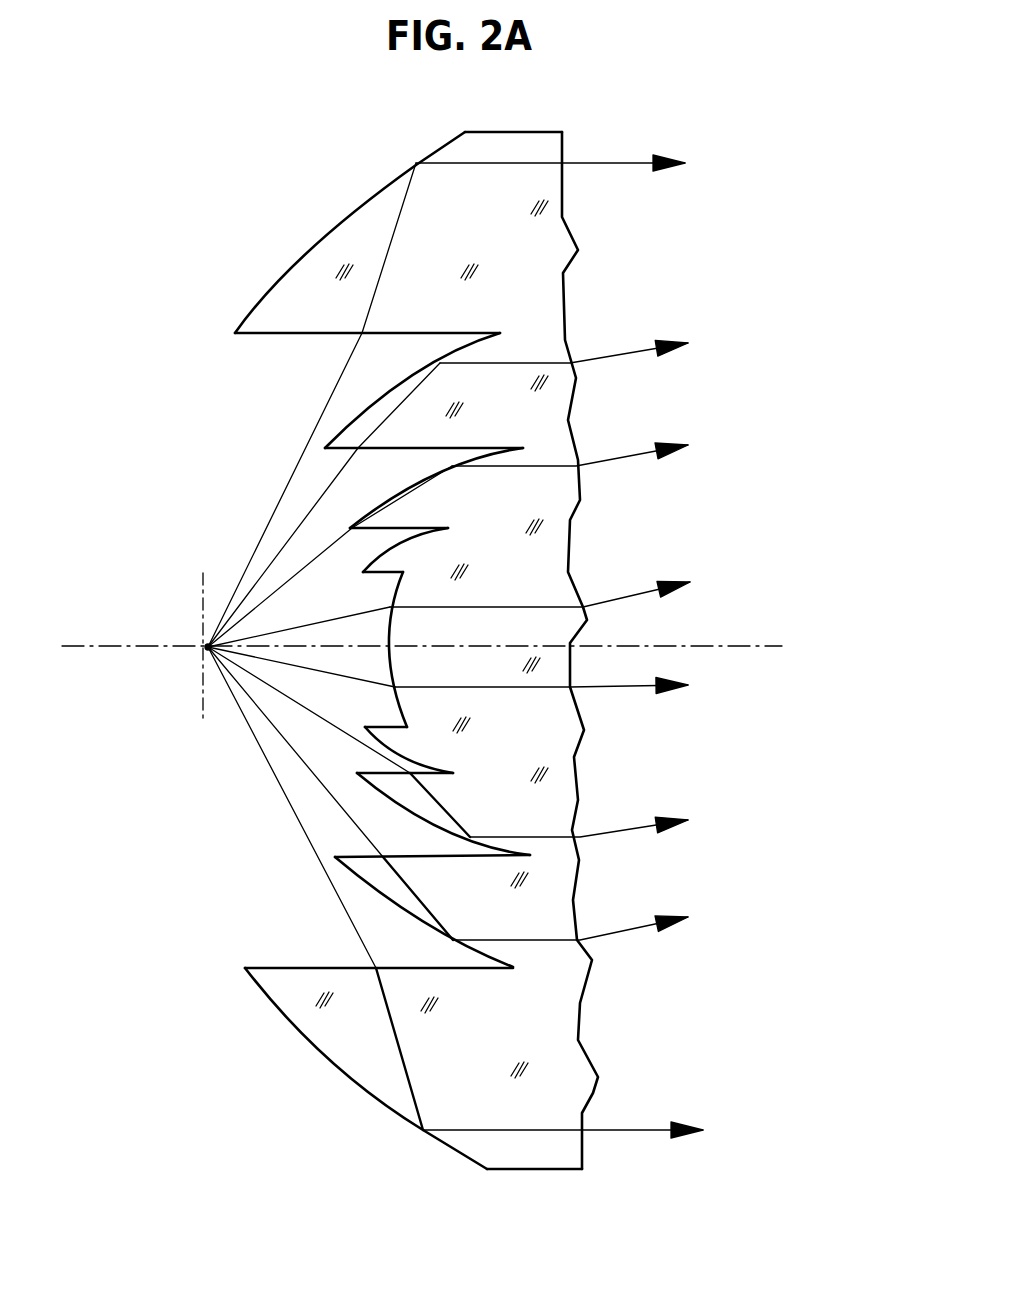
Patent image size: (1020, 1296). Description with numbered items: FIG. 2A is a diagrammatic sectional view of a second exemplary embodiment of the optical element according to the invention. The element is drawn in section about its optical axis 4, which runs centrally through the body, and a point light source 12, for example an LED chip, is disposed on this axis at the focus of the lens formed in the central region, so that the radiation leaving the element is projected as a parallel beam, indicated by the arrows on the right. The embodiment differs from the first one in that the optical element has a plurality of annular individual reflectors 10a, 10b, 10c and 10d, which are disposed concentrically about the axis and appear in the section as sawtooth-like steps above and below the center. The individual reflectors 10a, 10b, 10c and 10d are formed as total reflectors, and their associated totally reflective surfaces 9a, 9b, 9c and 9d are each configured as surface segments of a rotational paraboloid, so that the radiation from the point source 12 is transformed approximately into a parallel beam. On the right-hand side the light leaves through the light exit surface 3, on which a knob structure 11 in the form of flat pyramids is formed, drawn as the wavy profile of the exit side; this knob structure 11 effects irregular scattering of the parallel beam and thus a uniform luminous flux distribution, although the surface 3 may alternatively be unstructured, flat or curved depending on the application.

The light exit surface 3 is at (563, 217).
The knob structure 11 is at (572, 268).
The optical axis 4 is at (770, 643).
The point light source 12 is at (202, 644).
The individual reflector 10a is at (387, 563).
The individual reflector 10b is at (377, 517).
The individual reflector 10c is at (355, 440).
The individual reflector 10d is at (288, 300).
The totally reflective surface 9a is at (347, 763).
The totally reflective surface 9b is at (355, 818).
The totally reflective surface 9c is at (357, 888).
The totally reflective surface 9d is at (325, 1063).